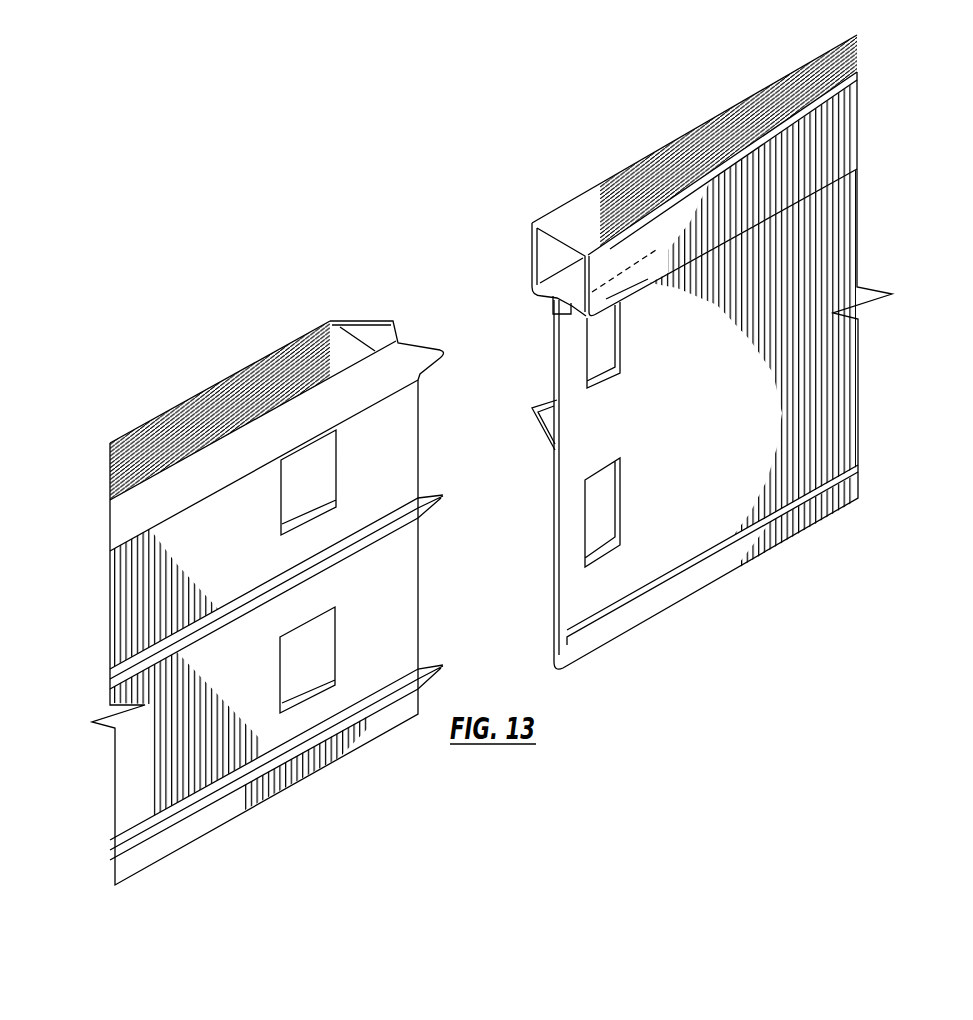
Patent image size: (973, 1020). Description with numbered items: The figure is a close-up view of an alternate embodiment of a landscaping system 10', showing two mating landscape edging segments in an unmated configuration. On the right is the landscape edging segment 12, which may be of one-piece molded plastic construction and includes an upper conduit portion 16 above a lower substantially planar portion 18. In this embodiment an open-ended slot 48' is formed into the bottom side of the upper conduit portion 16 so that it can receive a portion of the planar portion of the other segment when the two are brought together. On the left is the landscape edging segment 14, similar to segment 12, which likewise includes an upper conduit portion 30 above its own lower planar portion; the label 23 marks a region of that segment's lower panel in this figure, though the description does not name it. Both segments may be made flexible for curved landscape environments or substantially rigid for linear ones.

The landscaping system 10' is at (501, 460).
The landscape edging segment 12 is at (718, 110).
The landscape edging segment 14 is at (226, 374).
The upper conduit portion 16 is at (570, 212).
The lower substantially planar portion 18 is at (773, 433).
The web of lower panel 23 is at (397, 592).
The upper conduit portion 30 is at (315, 337).
The open-ended slot 48' is at (517, 311).